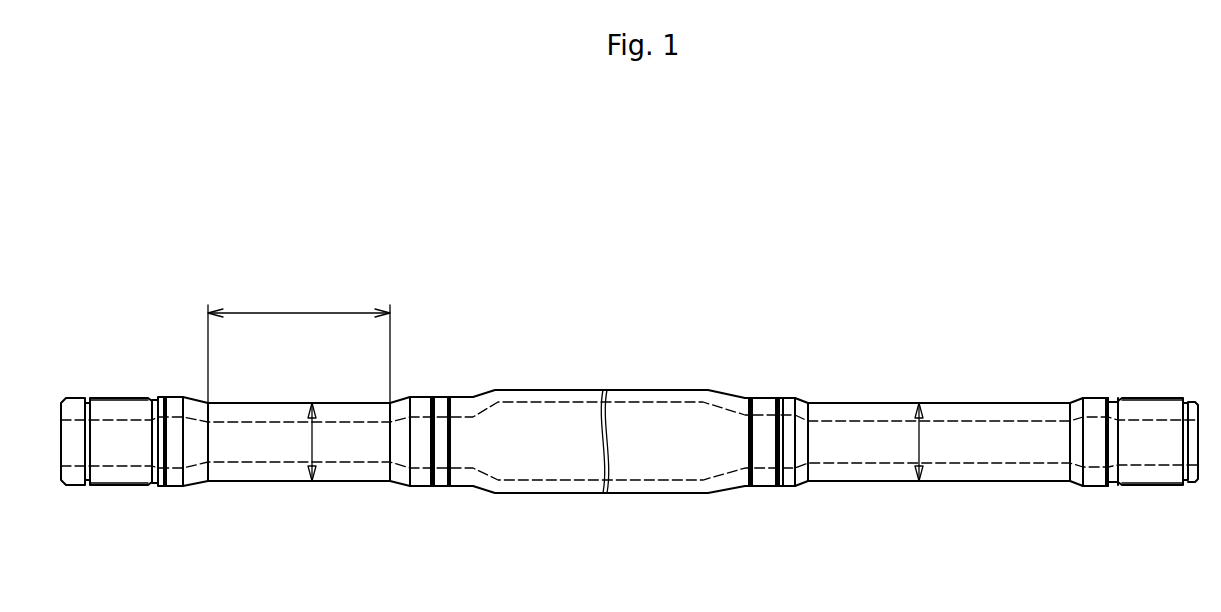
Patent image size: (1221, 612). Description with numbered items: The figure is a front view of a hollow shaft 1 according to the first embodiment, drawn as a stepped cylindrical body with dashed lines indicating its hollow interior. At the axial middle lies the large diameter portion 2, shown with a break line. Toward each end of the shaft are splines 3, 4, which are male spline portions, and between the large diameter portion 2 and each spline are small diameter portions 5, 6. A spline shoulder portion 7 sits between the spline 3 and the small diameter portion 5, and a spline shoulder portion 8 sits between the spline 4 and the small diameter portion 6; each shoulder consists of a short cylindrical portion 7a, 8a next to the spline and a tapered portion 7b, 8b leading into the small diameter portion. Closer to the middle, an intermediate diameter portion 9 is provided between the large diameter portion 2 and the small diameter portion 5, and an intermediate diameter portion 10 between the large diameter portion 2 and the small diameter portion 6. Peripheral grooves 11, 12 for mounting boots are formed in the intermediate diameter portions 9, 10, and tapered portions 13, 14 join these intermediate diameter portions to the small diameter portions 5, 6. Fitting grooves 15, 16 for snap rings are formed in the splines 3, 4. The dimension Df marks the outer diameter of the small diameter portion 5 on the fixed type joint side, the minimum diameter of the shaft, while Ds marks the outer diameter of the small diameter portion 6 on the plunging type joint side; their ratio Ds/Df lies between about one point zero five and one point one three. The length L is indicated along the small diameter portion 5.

The hollow shaft 1 is at (680, 330).
The large diameter portion 2 is at (573, 392).
The spline 3 is at (113, 396).
The spline 4 is at (1155, 398).
The small diameter portion 5 is at (332, 473).
The small diameter portion 6 is at (963, 475).
The spline shoulder portion 7 is at (177, 487).
The short cylindrical portion 7a is at (175, 405).
The tapered portion 7b is at (202, 475).
The spline shoulder portion 8 is at (1092, 486).
The short cylindrical portion 8a is at (1095, 407).
The tapered portion 8b is at (1077, 479).
The intermediate diameter portion 9 is at (422, 405).
The intermediate diameter portion 10 is at (788, 482).
The peripheral groove 11 is at (440, 478).
The peripheral groove 12 is at (767, 420).
The tapered portion 13 is at (400, 478).
The tapered portion 14 is at (802, 480).
The fitting groove 15 is at (85, 483).
The fitting groove 16 is at (1188, 482).